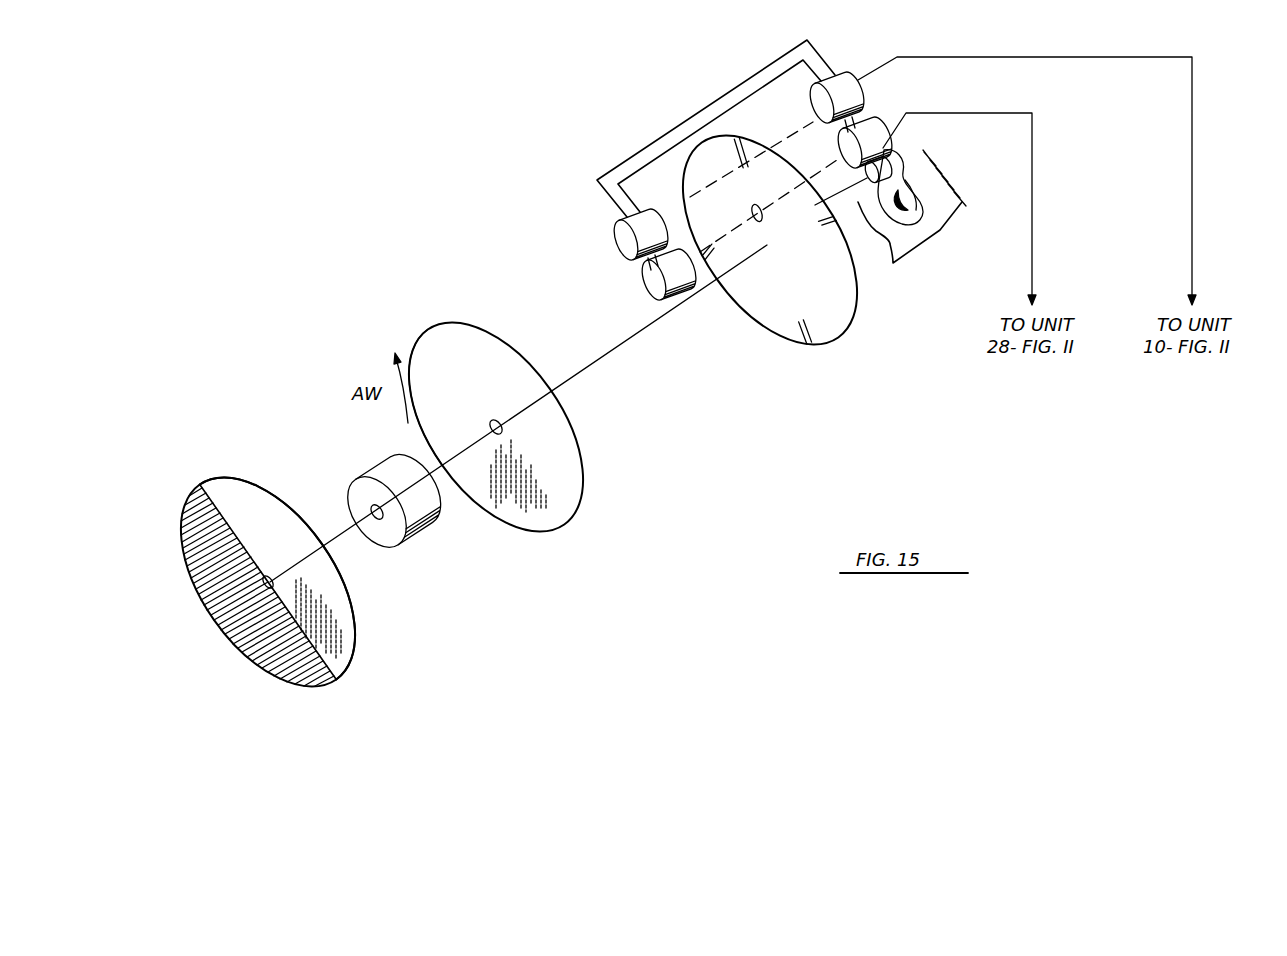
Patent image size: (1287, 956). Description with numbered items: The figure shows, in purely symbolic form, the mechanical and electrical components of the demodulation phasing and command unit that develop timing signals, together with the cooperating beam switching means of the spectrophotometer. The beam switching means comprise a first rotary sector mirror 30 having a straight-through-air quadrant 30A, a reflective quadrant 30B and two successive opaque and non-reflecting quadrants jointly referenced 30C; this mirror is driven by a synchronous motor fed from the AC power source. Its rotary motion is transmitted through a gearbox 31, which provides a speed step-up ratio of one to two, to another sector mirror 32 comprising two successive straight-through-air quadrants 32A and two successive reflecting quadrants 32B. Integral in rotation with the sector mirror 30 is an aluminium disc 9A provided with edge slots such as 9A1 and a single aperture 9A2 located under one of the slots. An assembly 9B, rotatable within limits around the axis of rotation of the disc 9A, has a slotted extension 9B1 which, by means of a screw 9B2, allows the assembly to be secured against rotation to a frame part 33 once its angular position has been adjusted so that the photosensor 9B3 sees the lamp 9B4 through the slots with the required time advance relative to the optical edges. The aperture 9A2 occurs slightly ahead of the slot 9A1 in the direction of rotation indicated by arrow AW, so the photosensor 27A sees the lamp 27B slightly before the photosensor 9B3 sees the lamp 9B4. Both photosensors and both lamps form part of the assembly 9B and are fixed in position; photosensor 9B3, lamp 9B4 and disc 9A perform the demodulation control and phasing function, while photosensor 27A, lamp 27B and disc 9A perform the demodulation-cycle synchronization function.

The first rotary sector mirror 30 is at (348, 690).
The straight-through-air quadrant 30A is at (252, 470).
The reflective quadrant 30B is at (357, 622).
The opaque and non-reflecting quadrants 30C is at (208, 610).
The gearbox 31 is at (436, 521).
The sector mirror 32 is at (603, 503).
The straight-through-air quadrants 32A is at (418, 330).
The reflecting quadrants 32B is at (579, 450).
The aluminium disc 9A is at (745, 323).
The edge slot 9A1 is at (809, 344).
The aperture 9A2 is at (762, 217).
The assembly 9B is at (713, 70).
The slotted extension 9B1 is at (930, 228).
The screw 9B2 is at (890, 258).
The photosensor 9B3 is at (842, 84).
The lamp 9B4 is at (617, 232).
The photosensor 27A is at (880, 120).
The lamp 27B is at (648, 285).
The frame part 33 is at (955, 178).